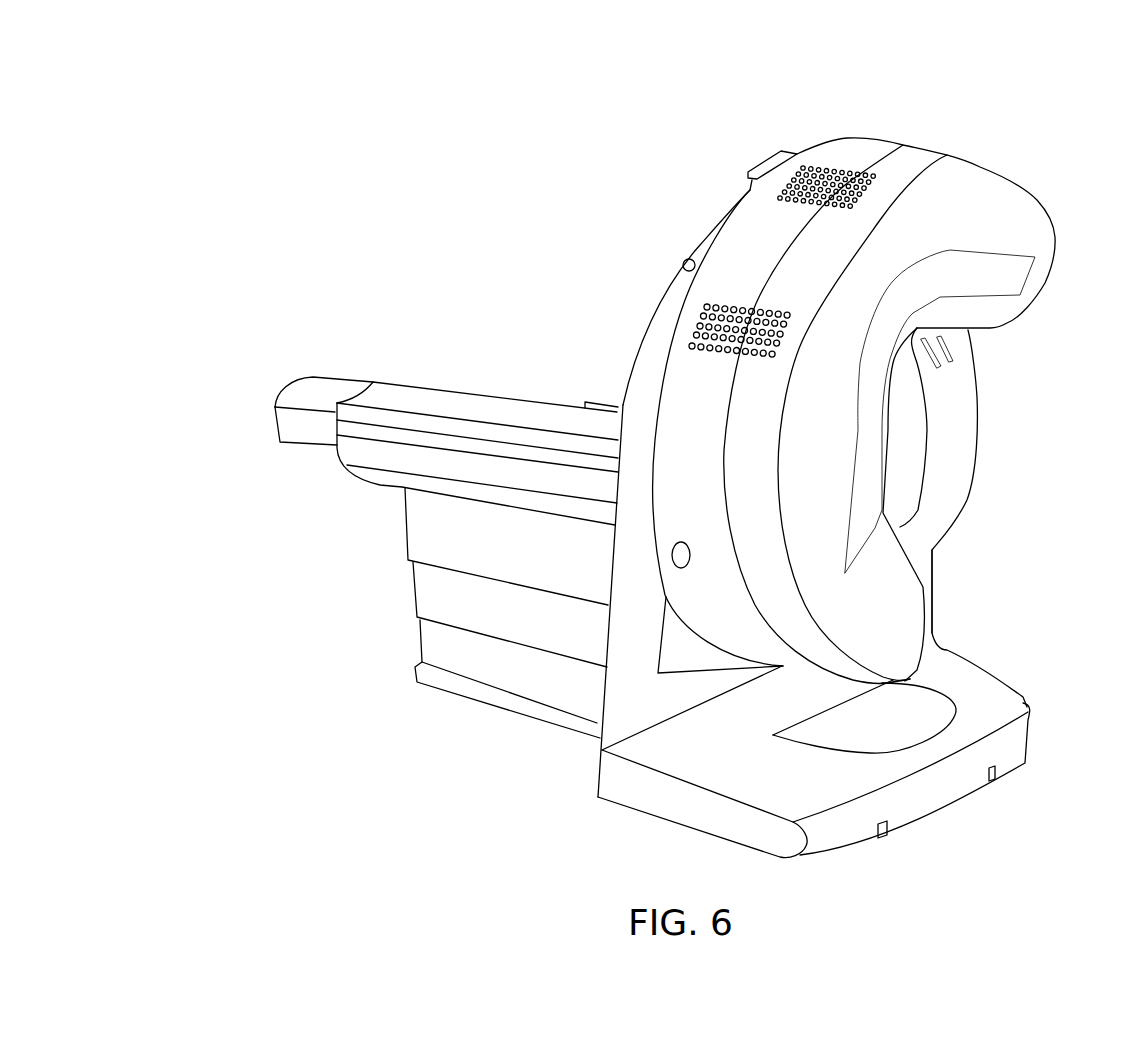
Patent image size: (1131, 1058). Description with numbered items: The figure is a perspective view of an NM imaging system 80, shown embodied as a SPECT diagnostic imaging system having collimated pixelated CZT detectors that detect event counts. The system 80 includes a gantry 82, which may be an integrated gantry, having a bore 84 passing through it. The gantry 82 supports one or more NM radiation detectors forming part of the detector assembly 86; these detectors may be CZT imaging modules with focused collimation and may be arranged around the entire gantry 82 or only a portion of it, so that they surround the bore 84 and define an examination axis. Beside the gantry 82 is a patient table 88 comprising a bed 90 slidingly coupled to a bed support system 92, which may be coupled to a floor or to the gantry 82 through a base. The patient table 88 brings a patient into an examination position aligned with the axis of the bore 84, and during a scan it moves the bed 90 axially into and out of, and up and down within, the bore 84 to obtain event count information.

The NM imaging system 80 is at (366, 744).
The gantry 82 is at (1019, 126).
The bore 84 is at (1030, 455).
The detector assembly 86 is at (912, 597).
The patient table 88 is at (332, 315).
The bed 90 is at (477, 392).
The bed support system 92 is at (495, 703).